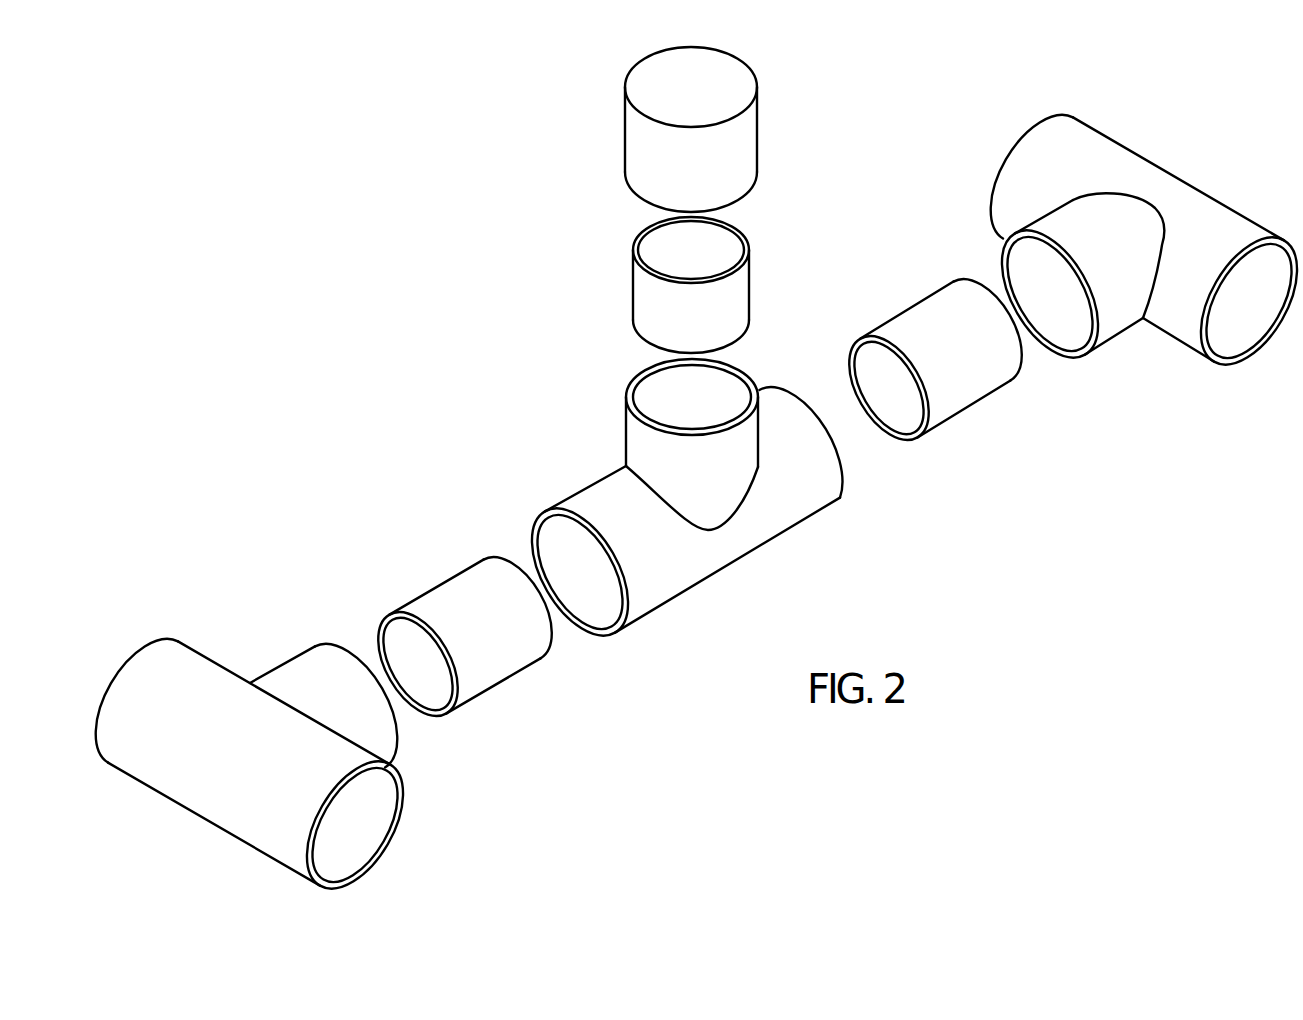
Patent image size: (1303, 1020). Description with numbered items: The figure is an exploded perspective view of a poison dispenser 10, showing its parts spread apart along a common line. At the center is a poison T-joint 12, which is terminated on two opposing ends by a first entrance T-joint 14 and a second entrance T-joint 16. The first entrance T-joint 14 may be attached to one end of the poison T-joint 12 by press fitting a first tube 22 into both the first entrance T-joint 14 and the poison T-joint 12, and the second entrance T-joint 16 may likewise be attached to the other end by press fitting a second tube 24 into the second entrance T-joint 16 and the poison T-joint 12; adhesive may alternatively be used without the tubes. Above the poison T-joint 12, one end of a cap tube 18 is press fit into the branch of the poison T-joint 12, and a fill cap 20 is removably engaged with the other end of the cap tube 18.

The poison dispenser 10 is at (699, 476).
The poison T-joint 12 is at (793, 510).
The first entrance T-joint 14 is at (176, 657).
The second entrance T-joint 16 is at (1085, 137).
The cap tube 18 is at (647, 290).
The fill cap 20 is at (643, 77).
The first tube 22 is at (513, 650).
The second tube 24 is at (960, 392).